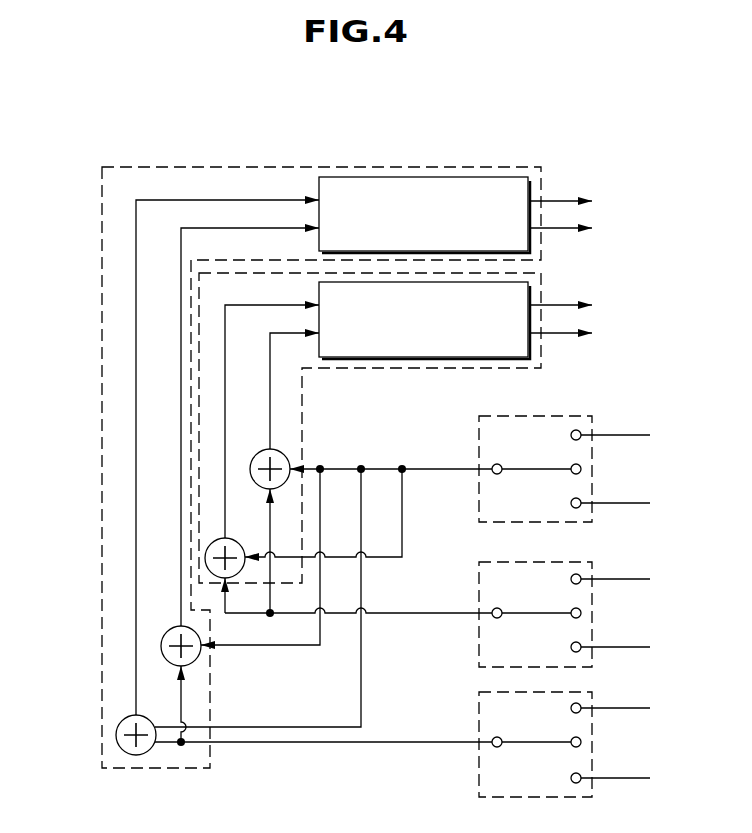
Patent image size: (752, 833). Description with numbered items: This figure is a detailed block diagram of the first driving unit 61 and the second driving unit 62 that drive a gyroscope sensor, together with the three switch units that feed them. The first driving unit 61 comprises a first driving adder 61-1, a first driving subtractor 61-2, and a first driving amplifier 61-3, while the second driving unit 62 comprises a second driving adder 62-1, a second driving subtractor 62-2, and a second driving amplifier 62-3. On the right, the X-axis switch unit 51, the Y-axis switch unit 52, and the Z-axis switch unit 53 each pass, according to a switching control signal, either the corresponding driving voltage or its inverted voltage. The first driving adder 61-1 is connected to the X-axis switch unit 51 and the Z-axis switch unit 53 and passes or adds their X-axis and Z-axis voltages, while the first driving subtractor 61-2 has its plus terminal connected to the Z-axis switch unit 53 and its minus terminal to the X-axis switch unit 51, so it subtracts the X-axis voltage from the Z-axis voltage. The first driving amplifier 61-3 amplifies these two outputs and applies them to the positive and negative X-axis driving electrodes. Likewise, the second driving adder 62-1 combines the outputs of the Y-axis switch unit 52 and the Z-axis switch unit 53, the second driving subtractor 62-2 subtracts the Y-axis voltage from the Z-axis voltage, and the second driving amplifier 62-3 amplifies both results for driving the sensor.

The first driving unit 61 is at (283, 165).
The first driving adder 61-1 is at (122, 721).
The first driving subtractor 61-2 is at (168, 632).
The first driving amplifier 61-3 is at (530, 188).
The second driving unit 62 is at (542, 372).
The second driving adder 62-1 is at (208, 545).
The second driving subtractor 62-2 is at (254, 457).
The second driving amplifier 62-3 is at (530, 292).
The X-axis switch unit 51 is at (580, 692).
The Y-axis switch unit 52 is at (580, 562).
The Z-axis switch unit 53 is at (580, 416).